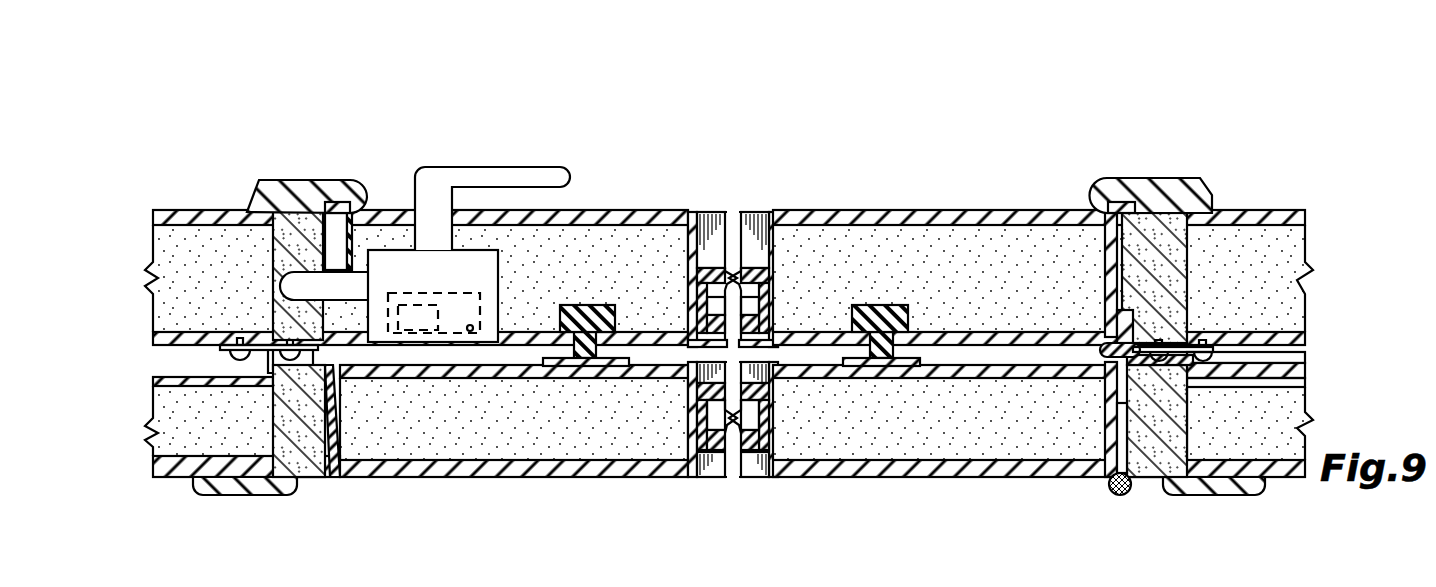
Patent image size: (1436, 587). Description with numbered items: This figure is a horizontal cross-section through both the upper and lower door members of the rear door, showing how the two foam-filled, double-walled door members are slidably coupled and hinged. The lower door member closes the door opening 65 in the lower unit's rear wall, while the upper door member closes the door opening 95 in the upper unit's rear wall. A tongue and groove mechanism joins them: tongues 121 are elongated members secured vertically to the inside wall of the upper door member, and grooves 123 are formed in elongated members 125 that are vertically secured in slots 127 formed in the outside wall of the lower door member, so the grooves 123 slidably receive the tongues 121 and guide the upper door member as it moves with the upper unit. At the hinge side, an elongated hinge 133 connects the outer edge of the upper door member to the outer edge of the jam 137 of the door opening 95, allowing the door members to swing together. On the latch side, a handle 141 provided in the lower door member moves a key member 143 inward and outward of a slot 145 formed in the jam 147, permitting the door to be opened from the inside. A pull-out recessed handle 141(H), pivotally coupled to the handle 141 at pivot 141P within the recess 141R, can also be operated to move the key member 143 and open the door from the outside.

The slot 145 is at (320, 282).
The key member 143 is at (330, 232).
The jam 147 is at (293, 215).
The door opening 95 is at (322, 230).
The recess 141R is at (408, 500).
The handle 141 is at (530, 167).
The pivot 141P is at (475, 329).
The tongue 121 is at (587, 327).
The groove 123 is at (602, 313).
The door opening 65 is at (327, 478).
The elongated member 125 is at (547, 318).
The slot 127 is at (613, 300).
The hinge 133 is at (1108, 485).
The jam 137 is at (1153, 463).